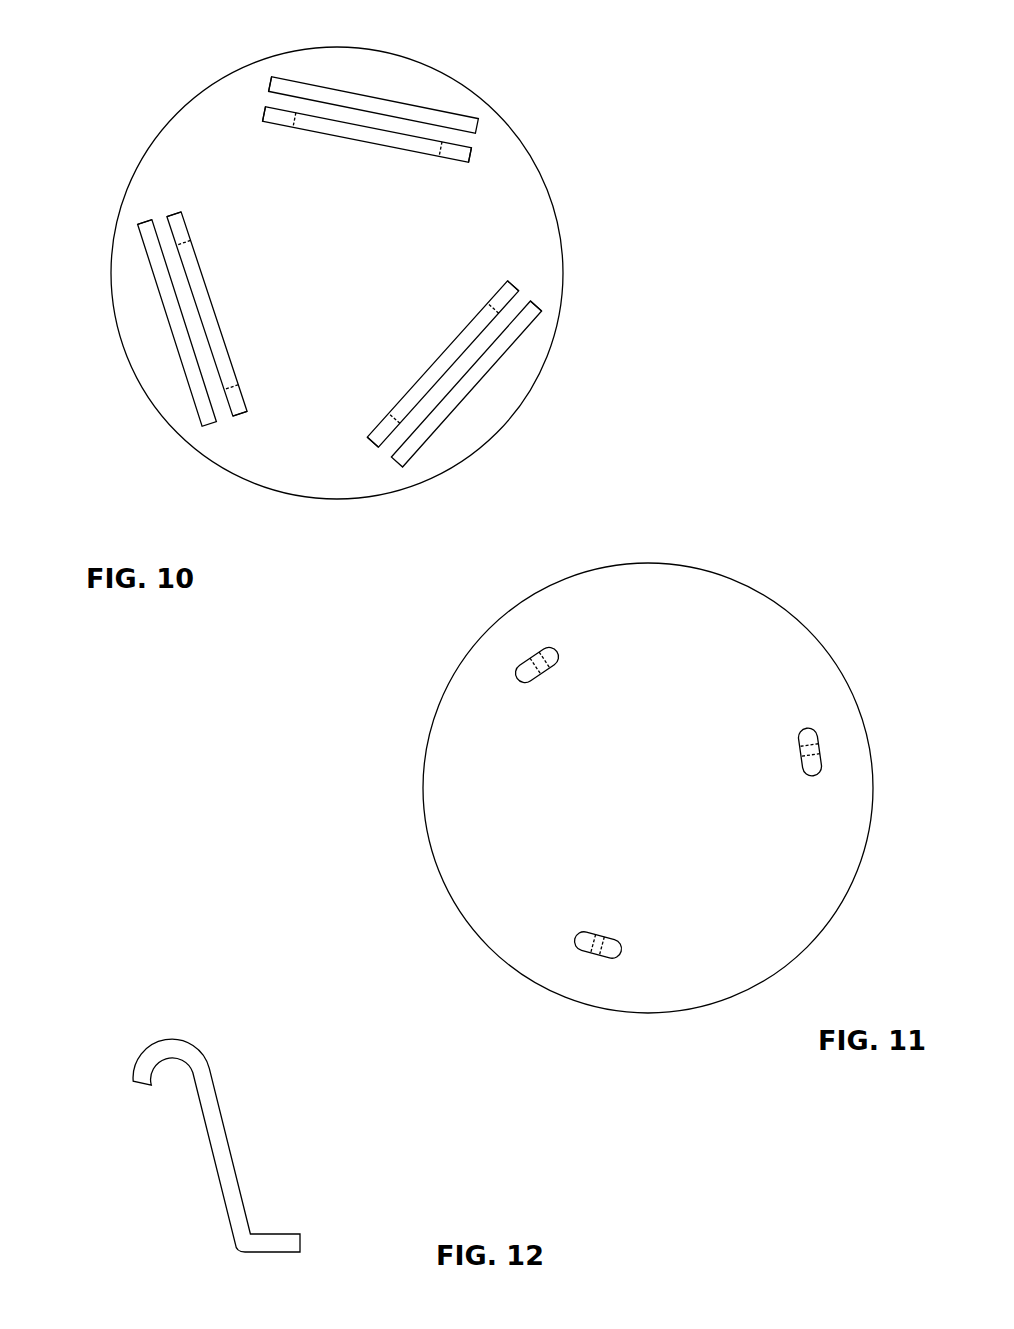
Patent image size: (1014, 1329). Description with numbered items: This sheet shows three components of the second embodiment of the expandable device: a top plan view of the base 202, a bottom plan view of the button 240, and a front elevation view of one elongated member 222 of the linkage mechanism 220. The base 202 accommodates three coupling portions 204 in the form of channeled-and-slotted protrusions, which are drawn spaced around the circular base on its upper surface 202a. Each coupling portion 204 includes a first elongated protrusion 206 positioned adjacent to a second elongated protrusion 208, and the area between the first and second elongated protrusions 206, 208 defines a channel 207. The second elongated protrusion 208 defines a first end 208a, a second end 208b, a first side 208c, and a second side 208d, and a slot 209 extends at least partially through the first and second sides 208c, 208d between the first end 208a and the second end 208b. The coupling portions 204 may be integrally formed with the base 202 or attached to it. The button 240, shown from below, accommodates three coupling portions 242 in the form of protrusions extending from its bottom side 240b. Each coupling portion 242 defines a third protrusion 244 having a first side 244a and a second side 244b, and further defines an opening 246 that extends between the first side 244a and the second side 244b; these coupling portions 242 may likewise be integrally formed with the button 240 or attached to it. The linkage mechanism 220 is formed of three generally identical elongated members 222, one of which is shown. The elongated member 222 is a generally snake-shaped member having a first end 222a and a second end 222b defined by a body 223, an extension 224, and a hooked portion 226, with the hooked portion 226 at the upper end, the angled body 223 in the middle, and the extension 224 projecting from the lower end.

In FIG. 10, the base 202 is at (566, 258).
In FIG. 10, the plate surface 202a is at (318, 247).
In FIG. 10, the coupling portion 204 is at (340, 277).
In FIG. 10, the first elongated protrusion 206 is at (436, 118).
In FIG. 10, the channel 207 is at (266, 97).
In FIG. 10, the second elongated protrusion 208 is at (476, 159).
In FIG. 10, the first end 208a is at (261, 115).
In FIG. 10, the second end 208b is at (479, 150).
In FIG. 10, the first side 208c is at (459, 132).
In FIG. 10, the second side 208d is at (452, 165).
In FIG. 10, the slot 209 is at (306, 128).
In FIG. 11, the button 240 is at (873, 740).
In FIG. 11, the bottom side 240b is at (661, 791).
In FIG. 11, the coupling portion 242 is at (672, 801).
In FIG. 11, the third protrusion 244 is at (556, 648).
In FIG. 11, the first side 244a is at (514, 662).
In FIG. 11, the second side 244b is at (539, 689).
In FIG. 11, the opening 246 is at (529, 658).
In FIG. 12, the linkage mechanism 220 is at (288, 1135).
In FIG. 12, the elongated member 222 is at (222, 1135).
In FIG. 12, the first end 222a is at (232, 1249).
In FIG. 12, the second end 222b is at (205, 1034).
In FIG. 12, the body 223 is at (230, 1197).
In FIG. 12, the extension 224 is at (275, 1237).
In FIG. 12, the hooked portion 226 is at (177, 1040).